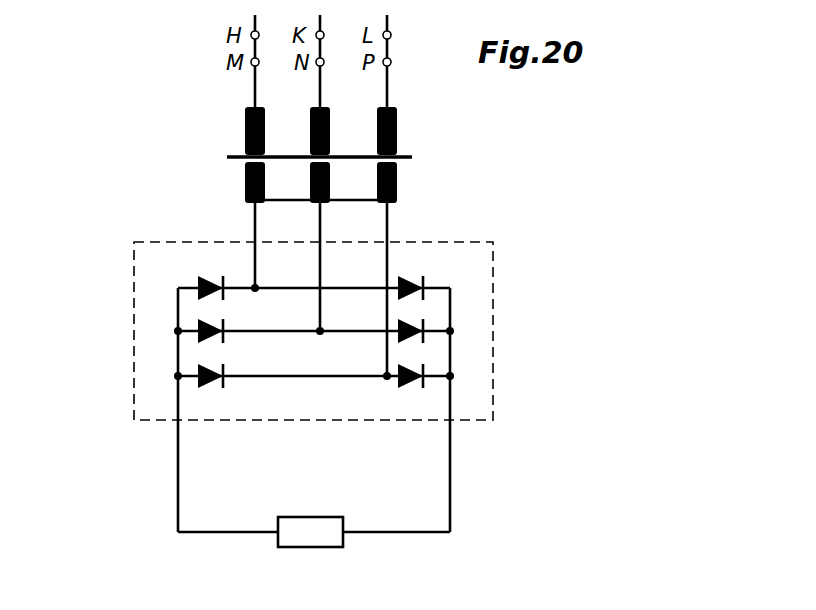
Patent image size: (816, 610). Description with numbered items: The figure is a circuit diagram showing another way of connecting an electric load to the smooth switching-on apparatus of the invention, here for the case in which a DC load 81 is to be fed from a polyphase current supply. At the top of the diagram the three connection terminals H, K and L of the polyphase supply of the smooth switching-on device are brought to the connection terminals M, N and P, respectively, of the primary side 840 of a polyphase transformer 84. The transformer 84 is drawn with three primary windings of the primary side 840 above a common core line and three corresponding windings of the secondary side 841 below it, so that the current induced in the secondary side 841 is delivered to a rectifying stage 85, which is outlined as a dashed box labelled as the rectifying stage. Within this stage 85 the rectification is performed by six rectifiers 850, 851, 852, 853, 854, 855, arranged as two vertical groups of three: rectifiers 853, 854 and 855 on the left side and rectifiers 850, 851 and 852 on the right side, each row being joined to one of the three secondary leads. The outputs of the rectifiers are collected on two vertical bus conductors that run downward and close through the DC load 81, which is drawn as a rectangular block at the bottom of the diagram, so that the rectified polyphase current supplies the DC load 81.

The DC load 81 is at (300, 535).
The polyphase transformer 84 is at (227, 157).
The primary side 840 is at (245, 122).
The secondary side 841 is at (245, 198).
The rectifying stage 85 is at (472, 295).
The rectifier 850 is at (417, 282).
The rectifier 851 is at (422, 335).
The rectifier 852 is at (420, 380).
The rectifier 853 is at (197, 280).
The rectifier 854 is at (192, 322).
The rectifier 855 is at (203, 385).